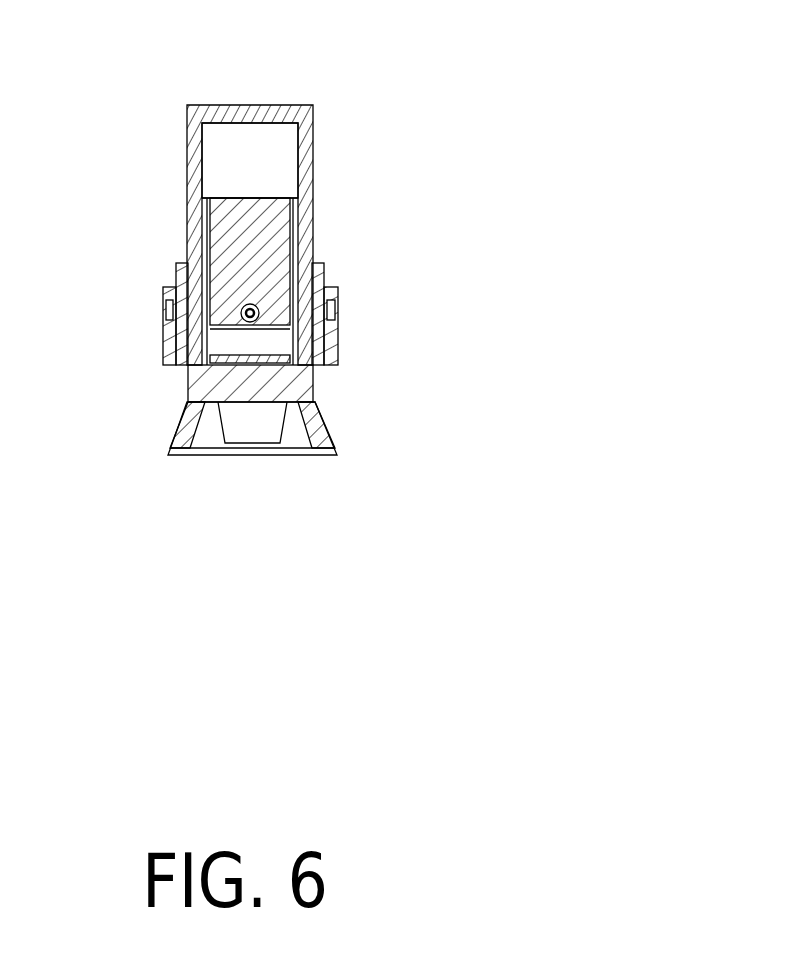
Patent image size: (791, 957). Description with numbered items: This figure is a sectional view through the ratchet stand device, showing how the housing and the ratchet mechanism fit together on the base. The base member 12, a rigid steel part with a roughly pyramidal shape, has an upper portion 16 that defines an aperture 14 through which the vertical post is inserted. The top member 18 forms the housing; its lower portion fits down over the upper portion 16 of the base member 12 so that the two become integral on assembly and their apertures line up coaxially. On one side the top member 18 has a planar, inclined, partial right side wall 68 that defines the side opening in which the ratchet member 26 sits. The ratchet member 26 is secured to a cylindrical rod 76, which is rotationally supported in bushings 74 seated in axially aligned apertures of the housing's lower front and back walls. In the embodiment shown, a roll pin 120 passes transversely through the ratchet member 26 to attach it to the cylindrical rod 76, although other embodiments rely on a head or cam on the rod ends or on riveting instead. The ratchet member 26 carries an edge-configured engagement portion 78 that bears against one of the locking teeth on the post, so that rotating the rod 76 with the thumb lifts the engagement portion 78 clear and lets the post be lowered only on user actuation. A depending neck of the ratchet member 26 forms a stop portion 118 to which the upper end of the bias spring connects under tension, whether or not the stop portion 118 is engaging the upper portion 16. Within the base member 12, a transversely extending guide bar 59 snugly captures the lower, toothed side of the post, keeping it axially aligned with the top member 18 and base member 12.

The base member 12 is at (322, 455).
The aperture 14 is at (175, 435).
The upper portion 16 is at (193, 442).
The top member 18 is at (200, 126).
The ratchet member 26 is at (268, 232).
The guide bar 59 is at (318, 387).
The partial right side wall 68 is at (272, 137).
The bushings 74 is at (178, 266).
The cylindrical rod 76 is at (165, 322).
The engagement portion 78 is at (222, 194).
The stop portion 118 is at (277, 443).
The roll pin 120 is at (314, 259).